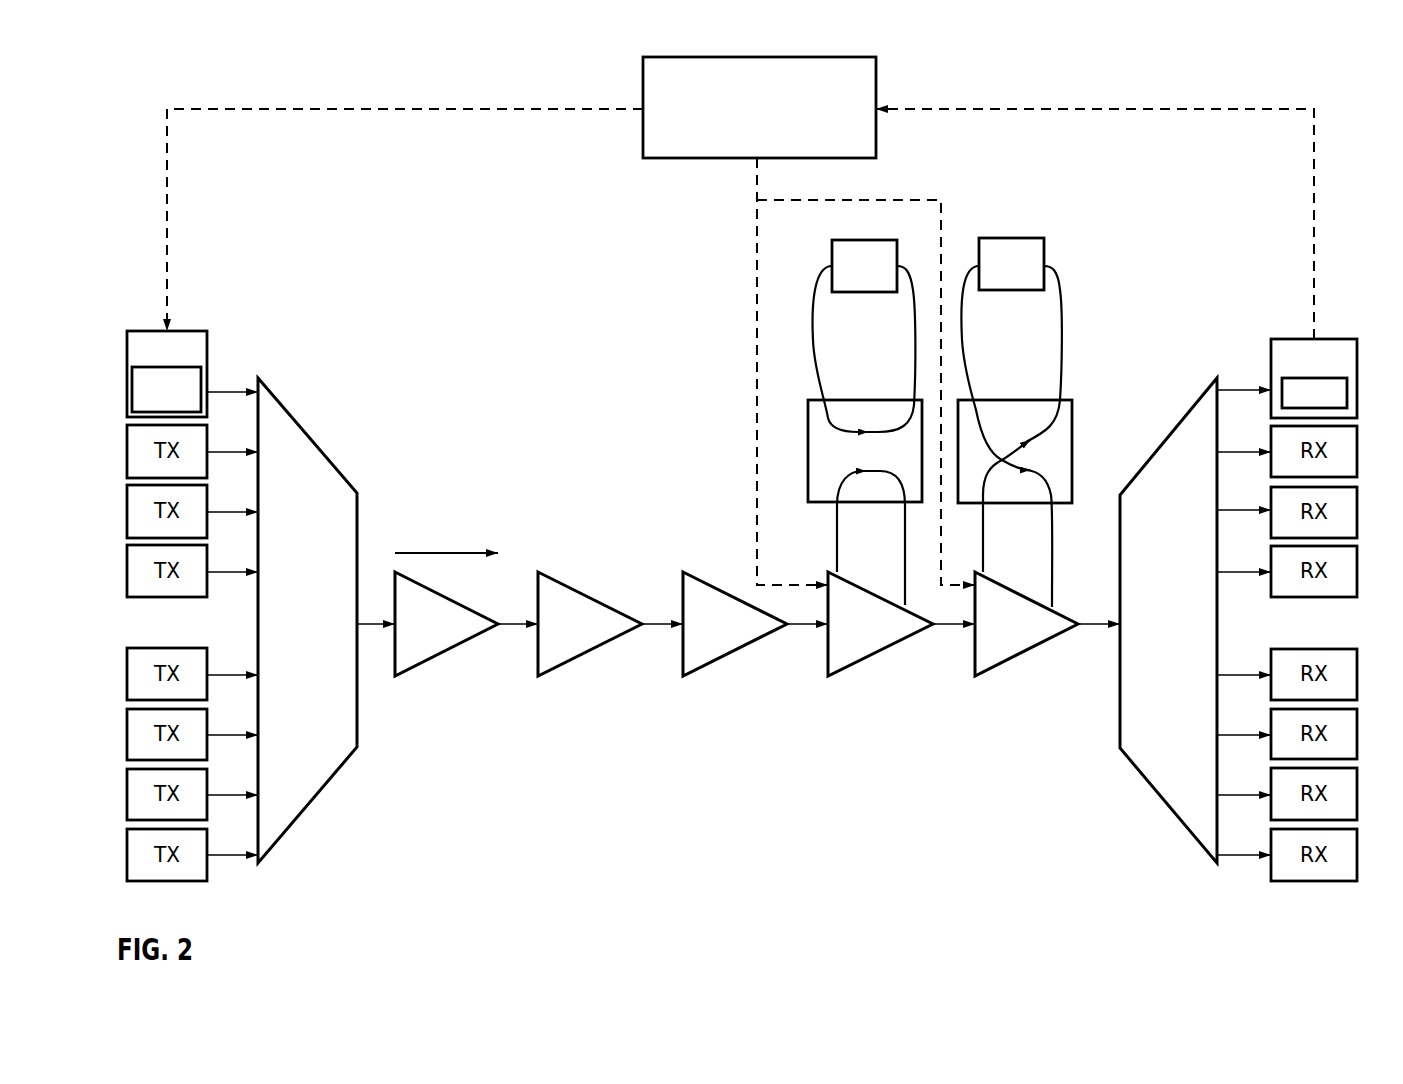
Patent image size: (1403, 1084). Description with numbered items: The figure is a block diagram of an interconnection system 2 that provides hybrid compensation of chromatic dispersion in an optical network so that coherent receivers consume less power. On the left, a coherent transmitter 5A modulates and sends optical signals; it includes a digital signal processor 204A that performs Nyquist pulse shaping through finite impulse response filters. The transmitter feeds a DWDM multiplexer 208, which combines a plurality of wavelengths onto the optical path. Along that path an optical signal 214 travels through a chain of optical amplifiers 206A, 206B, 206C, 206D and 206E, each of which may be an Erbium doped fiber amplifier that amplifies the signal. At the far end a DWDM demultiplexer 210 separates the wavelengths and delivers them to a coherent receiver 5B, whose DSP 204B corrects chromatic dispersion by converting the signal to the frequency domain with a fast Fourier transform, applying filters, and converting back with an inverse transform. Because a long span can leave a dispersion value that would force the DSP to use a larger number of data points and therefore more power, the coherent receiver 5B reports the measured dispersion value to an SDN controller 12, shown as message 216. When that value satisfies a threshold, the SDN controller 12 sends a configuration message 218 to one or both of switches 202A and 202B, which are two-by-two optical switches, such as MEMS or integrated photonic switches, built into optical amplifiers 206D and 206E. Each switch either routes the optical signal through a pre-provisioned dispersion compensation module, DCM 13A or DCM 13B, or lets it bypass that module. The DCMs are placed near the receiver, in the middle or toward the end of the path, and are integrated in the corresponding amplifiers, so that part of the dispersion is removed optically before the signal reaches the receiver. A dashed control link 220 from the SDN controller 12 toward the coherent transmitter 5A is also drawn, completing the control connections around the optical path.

The interconnection system 2 is at (1284, 84).
The SDN controller 12 is at (748, 132).
The coherent transmitter 5A is at (182, 331).
The coherent receiver 5B is at (1333, 339).
The digital signal processor 204A is at (145, 399).
The DSP 204B is at (1292, 403).
The DWDM multiplexer 208 is at (291, 633).
The DWDM demultiplexer 210 is at (1150, 633).
The optical amplifier 206A is at (410, 633).
The optical amplifier 206B is at (553, 633).
The optical amplifier 206C is at (696, 633).
The optical amplifier 206D is at (841, 633).
The optical amplifier 206E is at (988, 633).
The switch 202A is at (838, 400).
The switch 202B is at (990, 400).
The DCM 13A is at (880, 287).
The DCM 13B is at (1027, 285).
The optical signal 214 is at (445, 553).
The chromatic dispersion value message 216 is at (1155, 108).
The configuration message 218 is at (925, 200).
The control link 220 is at (428, 109).